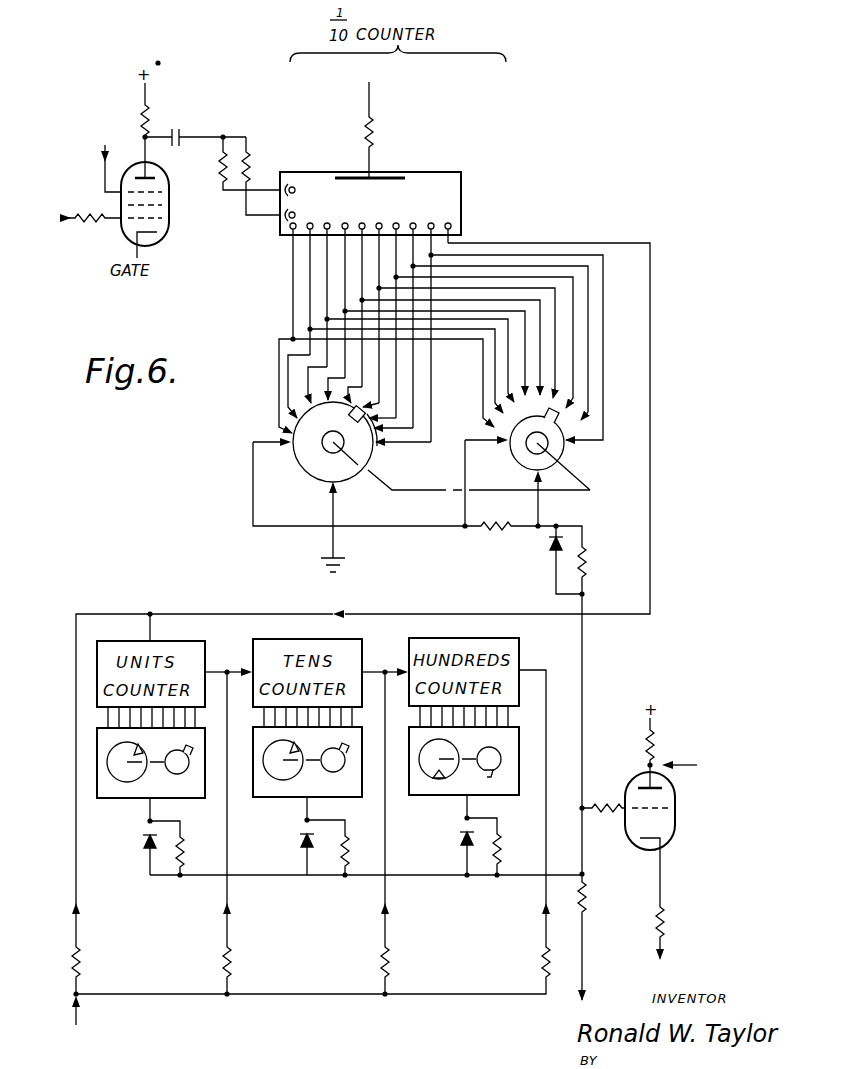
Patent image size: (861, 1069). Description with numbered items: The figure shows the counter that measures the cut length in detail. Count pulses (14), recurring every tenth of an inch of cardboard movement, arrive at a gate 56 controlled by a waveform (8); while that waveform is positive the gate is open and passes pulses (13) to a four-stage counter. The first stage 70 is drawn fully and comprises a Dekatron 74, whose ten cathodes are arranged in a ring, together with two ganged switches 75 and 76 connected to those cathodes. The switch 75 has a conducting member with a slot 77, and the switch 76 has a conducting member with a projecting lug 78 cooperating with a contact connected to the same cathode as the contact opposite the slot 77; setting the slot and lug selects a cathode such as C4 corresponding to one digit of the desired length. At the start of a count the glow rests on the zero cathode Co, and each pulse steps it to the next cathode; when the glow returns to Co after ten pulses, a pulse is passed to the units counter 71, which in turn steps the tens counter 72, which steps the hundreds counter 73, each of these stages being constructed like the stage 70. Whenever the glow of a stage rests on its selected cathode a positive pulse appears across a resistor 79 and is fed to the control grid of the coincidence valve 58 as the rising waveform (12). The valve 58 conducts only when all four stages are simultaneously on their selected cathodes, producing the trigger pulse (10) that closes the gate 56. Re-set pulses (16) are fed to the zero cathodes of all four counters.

The waveform 8 is at (106, 154).
The pulses from the gate 13 is at (238, 163).
The count pulses 14 is at (89, 206).
The gate 56 is at (169, 206).
The Dekatron 74 is at (320, 172).
The cathode C4 is at (379, 223).
The zero cathode Co is at (450, 223).
The first stage 70 is at (538, 236).
The switch 75 is at (311, 478).
The switch 76 is at (562, 448).
The slot 77 is at (375, 450).
The projecting lug 78 is at (566, 413).
The resistor 79 is at (501, 539).
The units counter 71 is at (152, 602).
The tens counter 72 is at (284, 598).
The hundreds counter 73 is at (457, 622).
The trigger pulse 10 is at (683, 752).
The waveform 12 is at (602, 795).
The coincidence valve 58 is at (664, 797).
The re-set pulses 16 is at (73, 1030).